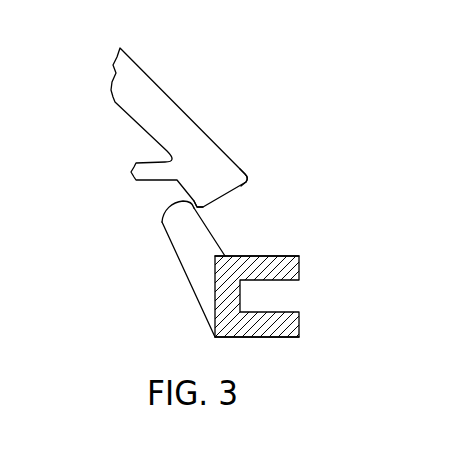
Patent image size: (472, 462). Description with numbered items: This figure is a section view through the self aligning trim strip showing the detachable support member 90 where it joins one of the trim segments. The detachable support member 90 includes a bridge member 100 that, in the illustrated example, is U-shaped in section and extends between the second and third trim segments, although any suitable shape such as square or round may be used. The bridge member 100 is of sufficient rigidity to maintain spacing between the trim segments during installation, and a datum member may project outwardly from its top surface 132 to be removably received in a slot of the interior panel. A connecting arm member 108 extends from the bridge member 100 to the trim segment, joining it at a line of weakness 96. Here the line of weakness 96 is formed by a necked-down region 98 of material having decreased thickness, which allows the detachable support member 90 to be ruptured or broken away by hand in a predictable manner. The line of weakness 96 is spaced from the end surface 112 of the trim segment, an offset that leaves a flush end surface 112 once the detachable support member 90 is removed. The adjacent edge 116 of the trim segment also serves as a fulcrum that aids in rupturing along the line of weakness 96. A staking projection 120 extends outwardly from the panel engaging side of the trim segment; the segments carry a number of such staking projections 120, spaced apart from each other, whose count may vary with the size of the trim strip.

The detachable support member 90 is at (277, 338).
The line of weakness 96 is at (172, 200).
The necked-down region 98 is at (212, 213).
The bridge member 100 is at (260, 275).
The connecting arm member 108 is at (170, 262).
The end surface 112 is at (244, 187).
The edge 116 is at (203, 205).
The staking projection 120 is at (135, 163).
The top surface 132 is at (280, 256).